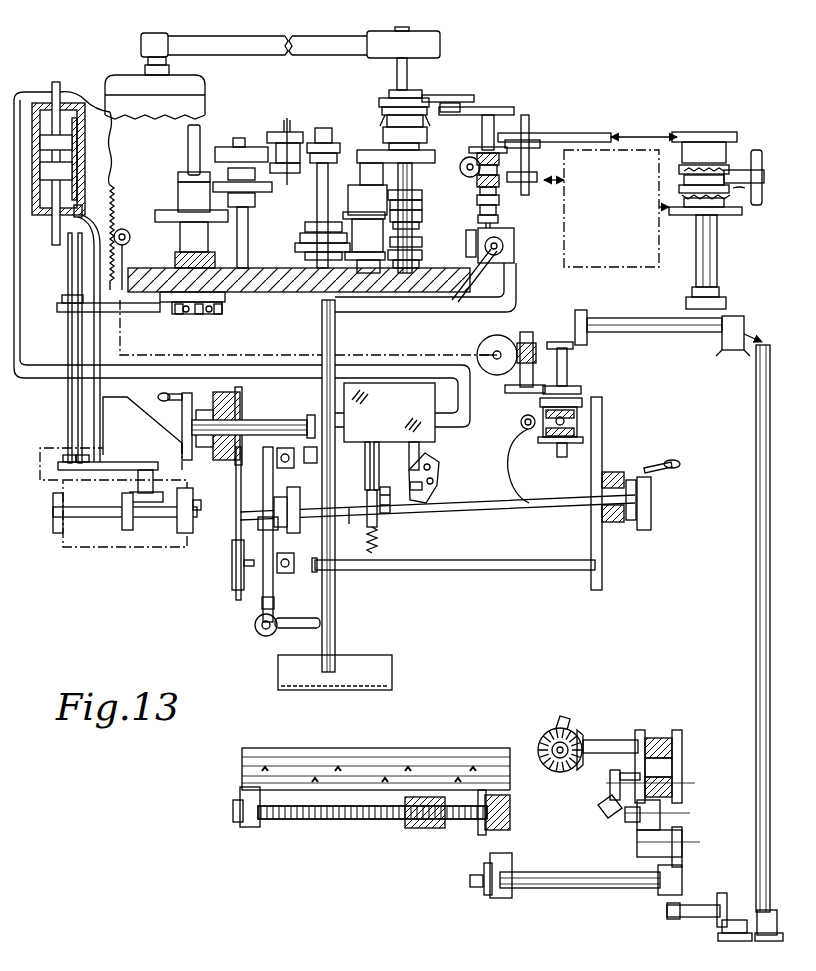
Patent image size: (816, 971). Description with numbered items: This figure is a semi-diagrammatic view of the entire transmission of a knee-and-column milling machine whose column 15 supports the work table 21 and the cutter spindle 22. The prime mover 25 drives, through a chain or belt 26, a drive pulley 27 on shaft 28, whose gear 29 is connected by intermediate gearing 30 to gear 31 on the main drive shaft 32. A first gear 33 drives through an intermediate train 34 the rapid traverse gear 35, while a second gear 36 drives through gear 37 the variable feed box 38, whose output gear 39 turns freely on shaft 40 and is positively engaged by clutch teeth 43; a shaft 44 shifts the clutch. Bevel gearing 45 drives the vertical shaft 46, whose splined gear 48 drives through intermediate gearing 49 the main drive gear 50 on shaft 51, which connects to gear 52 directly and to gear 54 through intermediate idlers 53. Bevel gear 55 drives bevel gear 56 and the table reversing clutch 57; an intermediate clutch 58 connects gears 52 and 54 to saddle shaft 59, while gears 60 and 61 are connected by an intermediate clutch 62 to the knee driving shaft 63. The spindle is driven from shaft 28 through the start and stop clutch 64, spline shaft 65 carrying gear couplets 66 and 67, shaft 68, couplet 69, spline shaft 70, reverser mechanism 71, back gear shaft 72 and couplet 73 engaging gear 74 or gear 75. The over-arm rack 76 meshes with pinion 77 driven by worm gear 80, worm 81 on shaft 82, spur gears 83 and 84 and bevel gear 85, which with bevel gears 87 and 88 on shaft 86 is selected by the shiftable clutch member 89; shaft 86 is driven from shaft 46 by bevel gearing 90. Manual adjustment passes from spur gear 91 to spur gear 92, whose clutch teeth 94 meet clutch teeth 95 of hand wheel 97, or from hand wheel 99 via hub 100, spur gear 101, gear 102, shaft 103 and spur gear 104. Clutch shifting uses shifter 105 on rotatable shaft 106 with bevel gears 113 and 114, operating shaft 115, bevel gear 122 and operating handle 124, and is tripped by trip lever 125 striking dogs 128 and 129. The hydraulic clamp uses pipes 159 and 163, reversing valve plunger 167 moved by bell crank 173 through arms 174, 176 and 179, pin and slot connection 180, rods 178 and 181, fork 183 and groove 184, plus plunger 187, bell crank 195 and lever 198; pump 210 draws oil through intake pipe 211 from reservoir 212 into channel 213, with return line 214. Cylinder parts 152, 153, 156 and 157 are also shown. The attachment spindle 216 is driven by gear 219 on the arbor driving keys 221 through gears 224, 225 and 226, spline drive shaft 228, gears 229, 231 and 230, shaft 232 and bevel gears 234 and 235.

The column 15 is at (300, 293).
The work table 21 is at (390, 750).
The cutter spindle 22 is at (225, 297).
The prime mover 25 is at (125, 78).
The chain or belt 26 is at (318, 27).
The drive pulley 27 is at (440, 40).
The shaft 28 is at (397, 72).
The gear 29 is at (425, 98).
The intermediate gearing 30 is at (462, 99).
The gear 31 is at (496, 110).
The main drive shaft 32 is at (482, 128).
The first gear 33 is at (469, 150).
The intermediate train 34 is at (548, 133).
The rapid traverse gear 35 is at (720, 133).
The second gear 36 is at (470, 177).
The gear 37 is at (525, 195).
The variable feed box 38 is at (564, 237).
The gear 39 is at (728, 214).
The supporting shaft 40 is at (717, 263).
The clutch teeth 43 is at (733, 188).
The shaft 44 is at (762, 166).
The bevel gearing 45 is at (724, 300).
The vertical shaft 46 is at (756, 370).
The gear 48 is at (757, 912).
The intermediate gearing 49 is at (718, 938).
The main drive gear 50 is at (682, 876).
The shaft 51 is at (620, 888).
The gear 52 is at (682, 800).
The intermediate idlers 53 is at (637, 845).
The gear 54 is at (633, 771).
The bevel gear 55 is at (483, 886).
The bevel gear 56 is at (518, 866).
The reversing clutch 57 is at (483, 820).
The intermediate clutch 58 is at (675, 769).
The shaft 59 is at (606, 813).
The gear 60 is at (640, 730).
The gear 61 is at (678, 730).
The intermediate clutch 62 is at (660, 738).
The knee driving shaft 63 is at (588, 745).
The start and stop clutch 64 is at (385, 121).
The spline shaft 65 is at (412, 180).
The shiftable gear couplet 66 is at (422, 216).
The shiftable gear couplet 67 is at (422, 251).
The shaft 68 is at (360, 170).
The shiftable gear couplet 69 is at (300, 248).
The spline shaft 70 is at (317, 201).
The reverser mechanism 71 is at (268, 141).
The back gear shaft 72 is at (248, 259).
The shiftable gear couplet 73 is at (255, 200).
The gear 74 is at (178, 190).
The gear 75 is at (178, 208).
The rack 76 is at (114, 200).
The pinion 77 is at (130, 240).
The worm gear 80 is at (492, 350).
The worm 81 is at (533, 346).
The shaft 82 is at (520, 380).
The spur gear 83 is at (510, 393).
The spur gear 84 is at (582, 389).
The bevel gear 85 is at (583, 403).
The shaft 86 is at (568, 367).
The bevel gear 87 is at (575, 450).
The bevel gear 88 is at (560, 458).
The shiftable clutch member 89 is at (578, 421).
The bevel gearing 90 is at (575, 331).
The spur gear 91 is at (602, 441).
The spur gear 92 is at (604, 476).
The clutch teeth 94 is at (613, 523).
The clutch teeth 95 is at (632, 523).
The hand wheel 97 is at (651, 511).
The hand wheel 99 is at (180, 400).
The hub 100 is at (210, 412).
The spur gear 101 is at (240, 411).
The gear 102 is at (237, 590).
The shaft 103 is at (517, 567).
The spur gear 104 is at (603, 579).
The clutch shifter 105 is at (521, 422).
The rotatable shaft 106 is at (352, 525).
The bevel gear 113 is at (293, 492).
The bevel gear 114 is at (262, 519).
The operating shaft 115 is at (275, 604).
The bevel gear 122 is at (255, 627).
The operating handle 124 is at (296, 630).
The trip lever 125 is at (290, 521).
The dog 128 is at (295, 468).
The dog 129 is at (293, 574).
The cylinder 152 is at (52, 238).
The piston 153 is at (62, 173).
The piston rod 156 is at (60, 92).
The piston 157 is at (70, 144).
The pipe 159 is at (20, 270).
The pipe 163 is at (96, 242).
The reversing valve plunger 167 is at (380, 461).
The bell crank 173 is at (440, 471).
The arm 174 is at (412, 486).
The arm 176 is at (440, 487).
The rod 178 is at (545, 502).
The arm 179 is at (440, 456).
The pin and slot connection 180 is at (420, 448).
The rod 181 is at (365, 450).
The fork 183 is at (306, 451).
The groove 184 is at (308, 418).
The plunger 187 is at (367, 481).
The bell crank 195 is at (410, 487).
The lever 198 is at (388, 514).
The pump 210 is at (499, 240).
The intake pipe 211 is at (460, 297).
The reservoir 212 is at (392, 672).
The channel 213 is at (518, 296).
The return line 214 is at (335, 592).
The cutter spindle 216 is at (187, 534).
The gear 219 is at (225, 311).
The arbor driving keys 221 is at (198, 316).
The gear 224 is at (150, 313).
The idler 225 is at (120, 326).
The gear 226 is at (57, 306).
The spline drive shaft 228 is at (68, 432).
The gear 229 is at (60, 471).
The gear 230 is at (160, 467).
The intermediate idler 231 is at (108, 476).
The shaft 232 is at (138, 491).
The bevel gear 234 is at (140, 531).
The bevel gear 235 is at (125, 536).